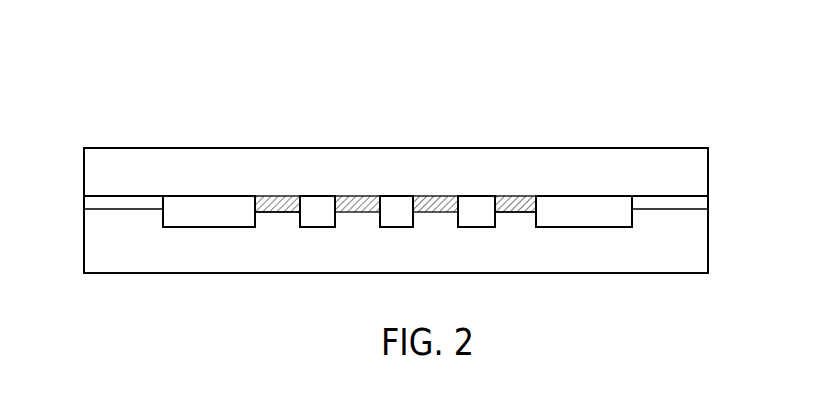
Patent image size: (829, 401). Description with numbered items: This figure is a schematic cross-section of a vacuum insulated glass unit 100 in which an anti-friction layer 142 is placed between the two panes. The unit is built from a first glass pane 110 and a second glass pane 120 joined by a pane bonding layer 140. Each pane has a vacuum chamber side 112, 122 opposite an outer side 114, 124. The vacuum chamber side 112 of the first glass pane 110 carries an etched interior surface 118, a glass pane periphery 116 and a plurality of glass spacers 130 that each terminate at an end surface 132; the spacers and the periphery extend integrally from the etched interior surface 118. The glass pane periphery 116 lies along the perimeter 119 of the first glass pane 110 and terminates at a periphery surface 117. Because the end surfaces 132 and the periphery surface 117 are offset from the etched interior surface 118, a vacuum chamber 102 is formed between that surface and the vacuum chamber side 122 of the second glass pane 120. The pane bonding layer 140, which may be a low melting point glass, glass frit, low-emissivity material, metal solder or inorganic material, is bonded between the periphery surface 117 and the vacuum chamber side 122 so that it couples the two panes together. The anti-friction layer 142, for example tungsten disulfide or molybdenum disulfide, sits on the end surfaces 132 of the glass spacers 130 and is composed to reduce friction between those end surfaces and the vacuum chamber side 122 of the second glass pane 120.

The vacuum insulated glass unit 100 is at (629, 61).
The vacuum chamber 102 is at (554, 211).
The first glass pane 110 is at (215, 312).
The vacuum chamber side 112 is at (233, 220).
The outer side 114 is at (150, 276).
The glass pane periphery 116 is at (88, 229).
The periphery surface 117 is at (130, 208).
The etched interior surface 118 is at (592, 218).
The perimeter 119 is at (84, 252).
The second glass pane 120 is at (274, 93).
The vacuum chamber side 122 is at (195, 200).
The outer side 124 is at (106, 146).
The glass spacers 130 is at (276, 216).
The end surface 132 is at (290, 208).
The pane bonding layer 140 is at (87, 200).
The anti-friction layer 142 is at (282, 197).